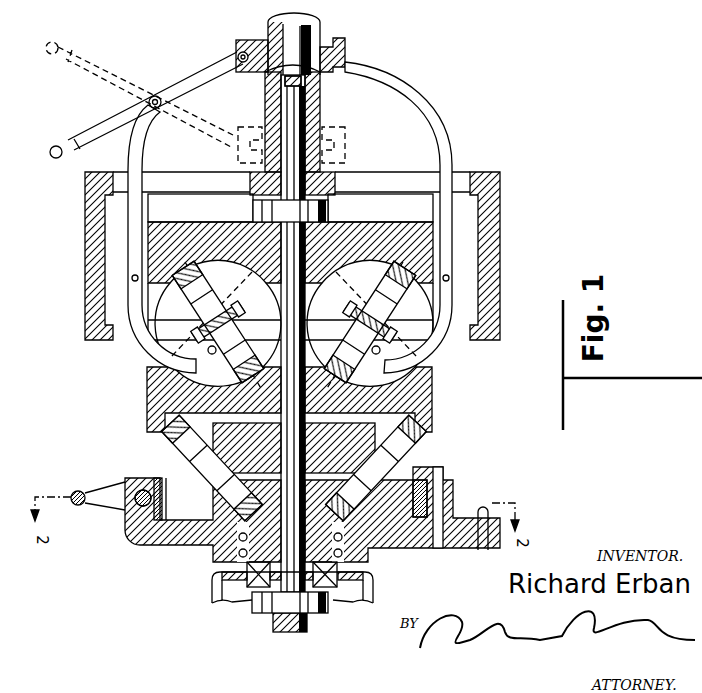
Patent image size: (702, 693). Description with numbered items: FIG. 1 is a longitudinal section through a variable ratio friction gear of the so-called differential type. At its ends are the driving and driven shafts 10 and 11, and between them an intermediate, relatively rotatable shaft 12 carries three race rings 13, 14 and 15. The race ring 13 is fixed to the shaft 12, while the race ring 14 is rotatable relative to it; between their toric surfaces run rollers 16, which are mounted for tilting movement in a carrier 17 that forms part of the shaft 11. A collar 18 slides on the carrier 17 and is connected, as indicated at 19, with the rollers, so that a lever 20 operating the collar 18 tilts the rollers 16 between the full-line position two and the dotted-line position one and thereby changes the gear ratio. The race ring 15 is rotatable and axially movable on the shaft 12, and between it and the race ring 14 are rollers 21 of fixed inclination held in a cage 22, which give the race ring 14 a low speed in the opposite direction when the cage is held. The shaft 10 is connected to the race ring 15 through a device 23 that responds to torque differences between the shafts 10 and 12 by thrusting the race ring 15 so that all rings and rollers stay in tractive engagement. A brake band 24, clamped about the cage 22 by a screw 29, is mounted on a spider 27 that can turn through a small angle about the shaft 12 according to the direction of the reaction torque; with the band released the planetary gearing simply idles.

The driving or driven shaft 10 is at (303, 632).
The driven or driving shaft 11 is at (307, 115).
The intermediate shaft 12 is at (318, 338).
The race ring 13 is at (148, 262).
The race ring 14 is at (147, 395).
The race ring 15 is at (340, 560).
The rollers 16 is at (252, 337).
The carrier 17 is at (85, 292).
The collar 18 is at (333, 45).
The connection 19 is at (446, 136).
The lever 20 is at (99, 136).
The rollers 21 is at (188, 453).
The cage 22 is at (208, 498).
The torque-responsive thrust device 23 is at (252, 592).
The brake band 24 is at (156, 476).
The spider 27 is at (168, 545).
The screw 29 is at (142, 492).